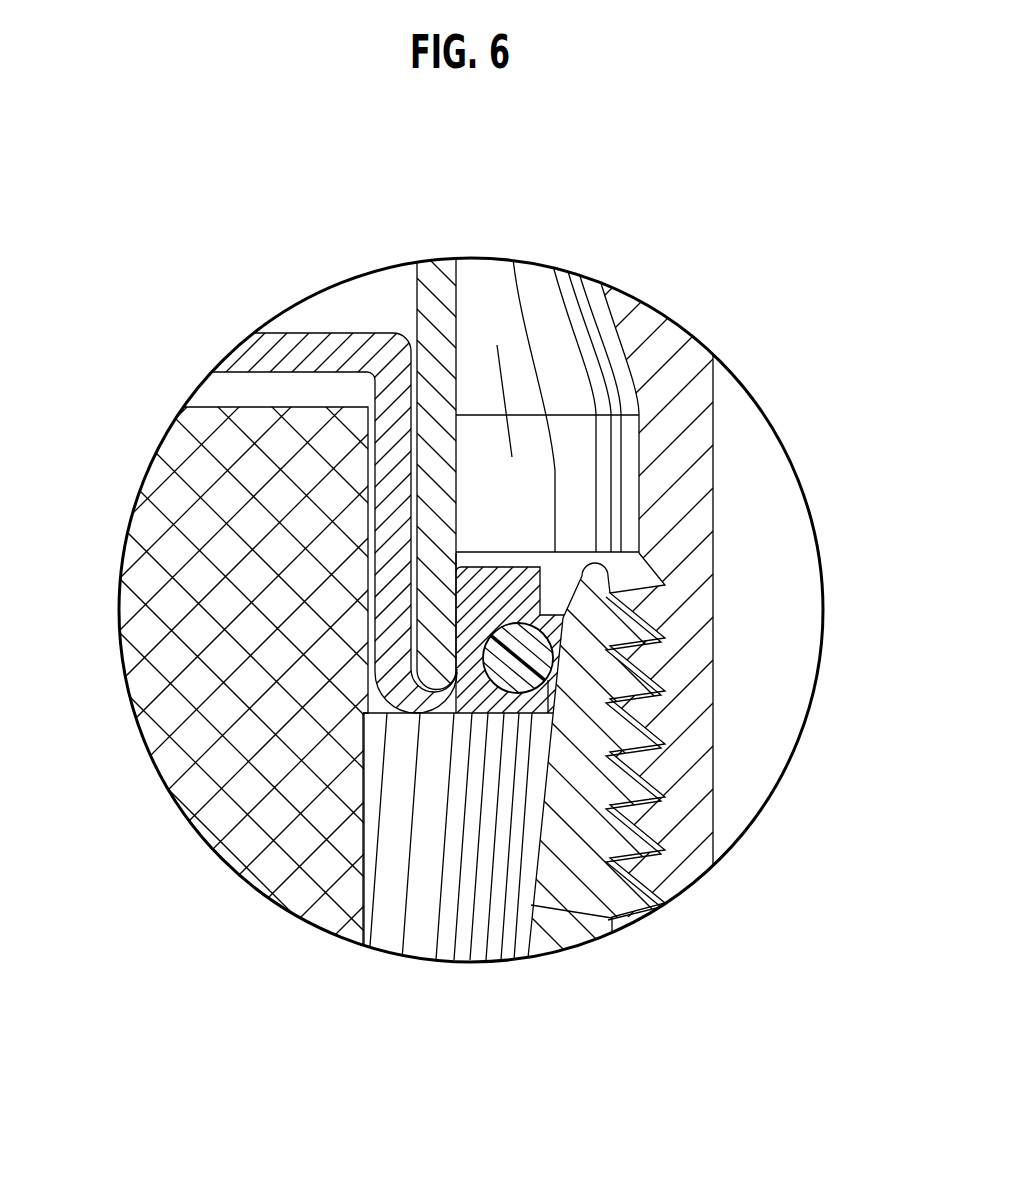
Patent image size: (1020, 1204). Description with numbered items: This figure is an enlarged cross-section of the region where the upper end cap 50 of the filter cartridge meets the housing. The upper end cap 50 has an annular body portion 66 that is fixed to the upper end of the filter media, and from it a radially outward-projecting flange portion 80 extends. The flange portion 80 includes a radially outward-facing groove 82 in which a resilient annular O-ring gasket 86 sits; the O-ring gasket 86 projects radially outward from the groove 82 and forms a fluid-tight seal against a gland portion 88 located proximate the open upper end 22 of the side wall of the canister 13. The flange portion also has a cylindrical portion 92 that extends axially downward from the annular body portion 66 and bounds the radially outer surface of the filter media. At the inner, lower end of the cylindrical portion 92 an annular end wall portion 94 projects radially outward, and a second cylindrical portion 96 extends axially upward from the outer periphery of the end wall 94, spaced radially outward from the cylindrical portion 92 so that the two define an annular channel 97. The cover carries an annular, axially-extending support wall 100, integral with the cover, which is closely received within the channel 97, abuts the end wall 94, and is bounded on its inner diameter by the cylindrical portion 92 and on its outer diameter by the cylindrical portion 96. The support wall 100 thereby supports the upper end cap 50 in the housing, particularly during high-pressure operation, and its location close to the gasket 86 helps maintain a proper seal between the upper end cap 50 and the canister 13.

The cylindrical canister 13 is at (597, 847).
The open upper end 22 is at (615, 555).
The upper end cap 50 is at (383, 282).
The annular body portion 66 is at (337, 347).
The flange portion 80 is at (522, 524).
The groove 82 is at (503, 693).
The O-ring gasket 86 is at (540, 662).
The gland portion 88 is at (607, 631).
The cylindrical portion 92 is at (387, 552).
The annular end wall portion 94 is at (445, 713).
The cylindrical portion 96 is at (460, 650).
The annular channel 97 is at (420, 692).
The support wall 100 is at (445, 373).